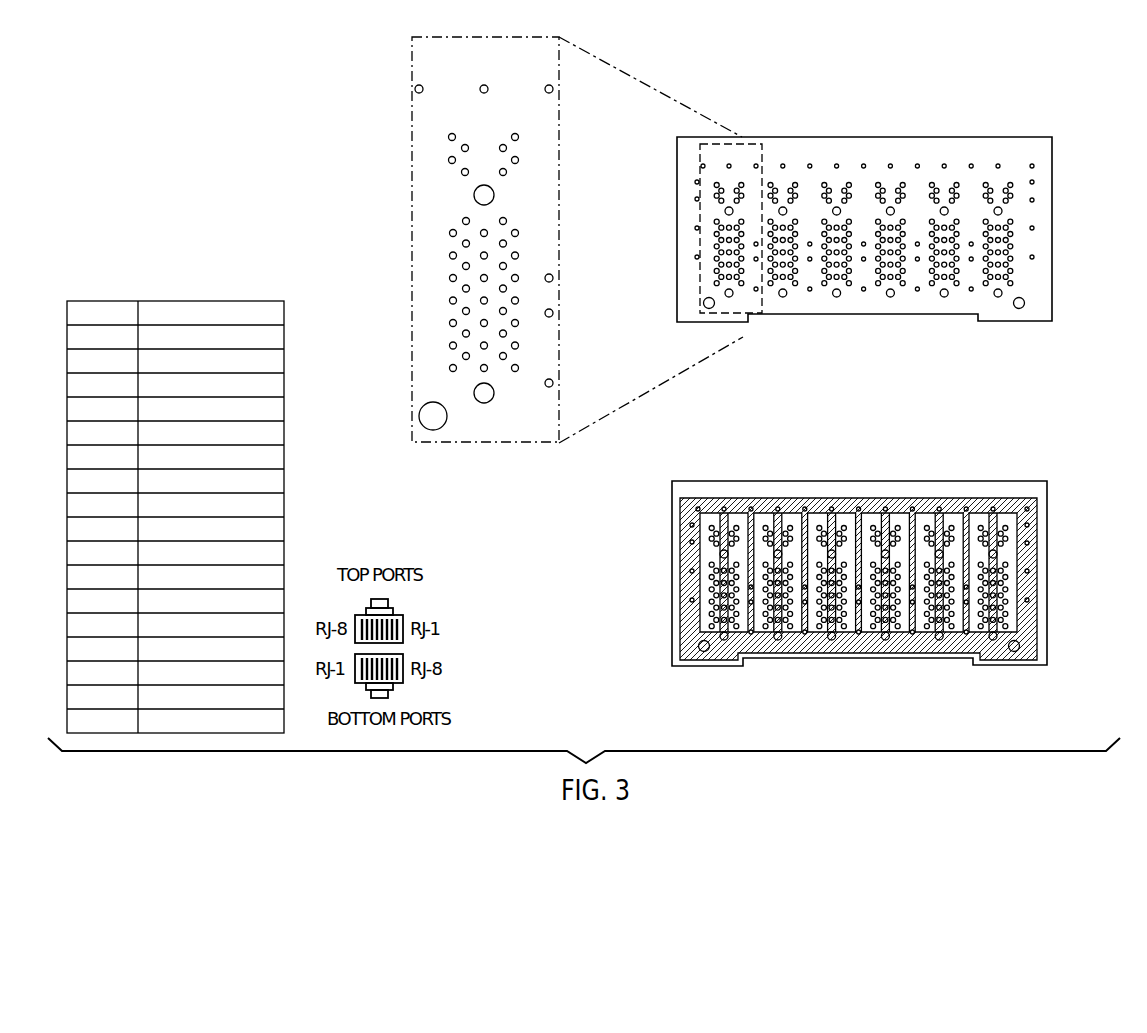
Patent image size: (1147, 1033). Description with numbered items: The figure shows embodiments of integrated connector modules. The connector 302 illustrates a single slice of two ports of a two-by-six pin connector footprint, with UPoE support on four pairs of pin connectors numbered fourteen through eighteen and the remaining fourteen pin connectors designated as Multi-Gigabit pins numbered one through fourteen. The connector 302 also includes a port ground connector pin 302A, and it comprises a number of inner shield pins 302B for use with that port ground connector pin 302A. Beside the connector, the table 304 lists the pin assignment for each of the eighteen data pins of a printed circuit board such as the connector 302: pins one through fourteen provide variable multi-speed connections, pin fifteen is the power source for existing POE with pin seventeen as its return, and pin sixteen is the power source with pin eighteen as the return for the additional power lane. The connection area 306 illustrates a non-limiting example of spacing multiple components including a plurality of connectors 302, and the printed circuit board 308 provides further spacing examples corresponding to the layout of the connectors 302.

The connector 302 is at (413, 239).
The port ground connector pin 302A is at (486, 76).
The inner shield pins 302B is at (482, 356).
The table 304 is at (173, 292).
The connection area 306 is at (1052, 481).
The printed circuit board 308 is at (1057, 136).